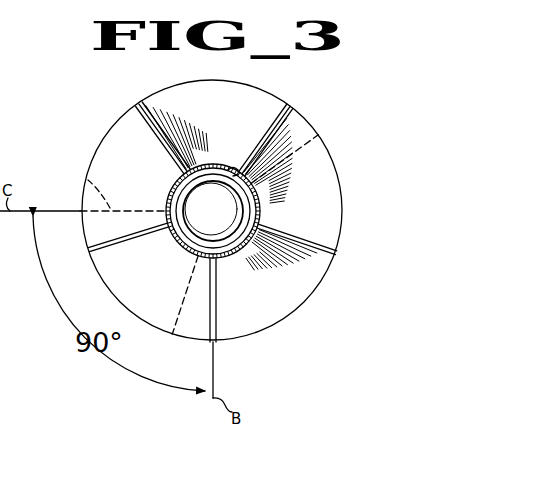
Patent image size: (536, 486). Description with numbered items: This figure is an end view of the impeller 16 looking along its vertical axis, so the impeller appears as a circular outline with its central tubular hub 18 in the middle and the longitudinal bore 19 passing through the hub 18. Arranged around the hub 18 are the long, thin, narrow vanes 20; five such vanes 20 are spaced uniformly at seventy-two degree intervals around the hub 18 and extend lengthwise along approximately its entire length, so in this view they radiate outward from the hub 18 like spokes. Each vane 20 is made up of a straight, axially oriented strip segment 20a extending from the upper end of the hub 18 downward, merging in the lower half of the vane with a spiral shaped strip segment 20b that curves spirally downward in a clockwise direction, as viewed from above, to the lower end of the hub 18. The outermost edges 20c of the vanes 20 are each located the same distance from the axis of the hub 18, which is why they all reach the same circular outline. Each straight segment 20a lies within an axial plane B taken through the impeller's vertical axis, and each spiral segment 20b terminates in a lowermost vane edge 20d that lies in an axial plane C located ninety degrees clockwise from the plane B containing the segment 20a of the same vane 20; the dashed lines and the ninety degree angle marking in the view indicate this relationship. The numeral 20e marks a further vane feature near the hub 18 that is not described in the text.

The impeller 16 is at (366, 160).
The tubular hub 18 is at (183, 247).
The longitudinal bore 19 is at (226, 232).
The impeller vanes 20 is at (113, 157).
The straight axially oriented strip segments 20a is at (160, 143).
The spiral shaped strip segments 20b is at (178, 89).
The outermost vane edges 20c is at (285, 108).
The lowermost vane edge 20d is at (93, 188).
The blade root 20e is at (232, 167).